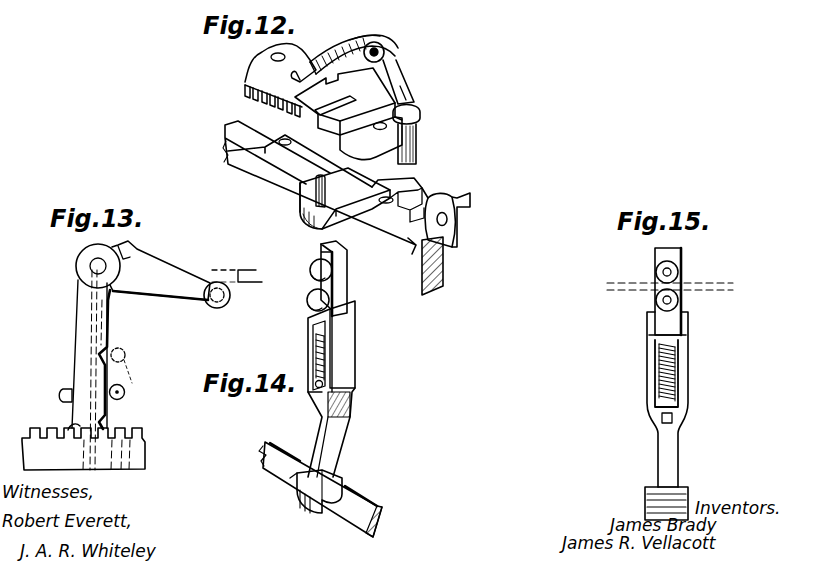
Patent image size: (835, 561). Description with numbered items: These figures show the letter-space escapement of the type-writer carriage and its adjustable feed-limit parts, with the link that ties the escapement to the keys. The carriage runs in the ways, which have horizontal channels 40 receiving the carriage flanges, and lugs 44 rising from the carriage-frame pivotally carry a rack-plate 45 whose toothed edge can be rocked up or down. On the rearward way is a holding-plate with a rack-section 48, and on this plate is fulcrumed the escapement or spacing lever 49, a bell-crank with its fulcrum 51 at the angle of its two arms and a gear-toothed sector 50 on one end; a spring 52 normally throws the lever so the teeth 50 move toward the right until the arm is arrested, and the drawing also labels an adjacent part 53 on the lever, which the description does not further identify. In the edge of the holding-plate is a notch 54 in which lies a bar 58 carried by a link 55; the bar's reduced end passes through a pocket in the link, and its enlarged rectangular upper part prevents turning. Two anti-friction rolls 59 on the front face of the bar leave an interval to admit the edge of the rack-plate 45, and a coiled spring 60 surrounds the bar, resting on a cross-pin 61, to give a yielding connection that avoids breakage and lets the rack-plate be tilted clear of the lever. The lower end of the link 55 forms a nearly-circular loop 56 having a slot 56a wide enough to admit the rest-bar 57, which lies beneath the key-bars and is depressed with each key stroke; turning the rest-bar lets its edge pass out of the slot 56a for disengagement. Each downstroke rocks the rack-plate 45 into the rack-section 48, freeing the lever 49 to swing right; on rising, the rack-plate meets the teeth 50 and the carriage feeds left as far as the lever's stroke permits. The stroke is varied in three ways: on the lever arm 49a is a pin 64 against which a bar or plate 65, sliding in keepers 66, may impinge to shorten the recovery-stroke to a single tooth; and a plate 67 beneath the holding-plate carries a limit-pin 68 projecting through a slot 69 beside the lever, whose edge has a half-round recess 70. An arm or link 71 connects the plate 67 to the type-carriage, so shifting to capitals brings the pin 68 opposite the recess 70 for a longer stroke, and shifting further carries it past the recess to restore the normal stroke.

In FIG. 12, the horizontal channels 40 is at (272, 160).
In FIG. 12, the lugs 44 is at (372, 152).
In FIG. 13, the rack-plate 45 is at (83, 449).
In FIG. 12, the rack-section 48 is at (244, 91).
In FIG. 12, the escapement or spacing lever 49 is at (400, 68).
In FIG. 13, the escapement or spacing lever 49 is at (76, 270).
In FIG. 12, the arm of the lever 49a is at (404, 92).
In FIG. 13, the arm of the lever 49a is at (172, 278).
In FIG. 12, the gear-toothed sector 50 is at (280, 63).
In FIG. 13, the gear-toothed sector 50 is at (67, 427).
In FIG. 12, the fulcrum 51 is at (383, 47).
In FIG. 12, the spring 52 is at (370, 40).
In FIG. 12, the curved pawl arm 53 is at (330, 58).
In FIG. 13, the curved pawl arm 53 is at (61, 394).
In FIG. 12, the notch 54 is at (374, 128).
In FIG. 14, the link 55 is at (347, 389).
In FIG. 15, the link 55 is at (653, 401).
In FIG. 14, the loop 56 is at (306, 512).
In FIG. 15, the loop 56 is at (645, 490).
In FIG. 14, the slot 56a is at (296, 486).
In FIG. 15, the slot 56a is at (688, 490).
In FIG. 14, the rest-bar 57 is at (320, 489).
In FIG. 14, the bar 58 is at (345, 280).
In FIG. 15, the bar 58 is at (681, 256).
In FIG. 12, the anti-friction rolls 59 is at (447, 266).
In FIG. 14, the anti-friction rolls 59 is at (310, 282).
In FIG. 15, the anti-friction rolls 59 is at (670, 289).
In FIG. 14, the coiled spring 60 is at (316, 357).
In FIG. 15, the coiled spring 60 is at (676, 389).
In FIG. 14, the cross-pin 61 is at (316, 388).
In FIG. 15, the cross-pin 61 is at (662, 408).
In FIG. 12, the pin 64 is at (416, 132).
In FIG. 13, the pin 64 is at (224, 296).
In FIG. 13, the bar or plate 65 is at (237, 266).
In FIG. 12, the keepers 66 is at (457, 230).
In FIG. 12, the plate 67 is at (345, 198).
In FIG. 12, the limit-pin 68 is at (315, 200).
In FIG. 13, the limit-pin 68 is at (122, 390).
In FIG. 12, the slot 69 is at (335, 106).
In FIG. 12, the half-round recess 70 is at (345, 99).
In FIG. 13, the half-round recess 70 is at (102, 351).
In FIG. 12, the arm or link 71 is at (462, 198).